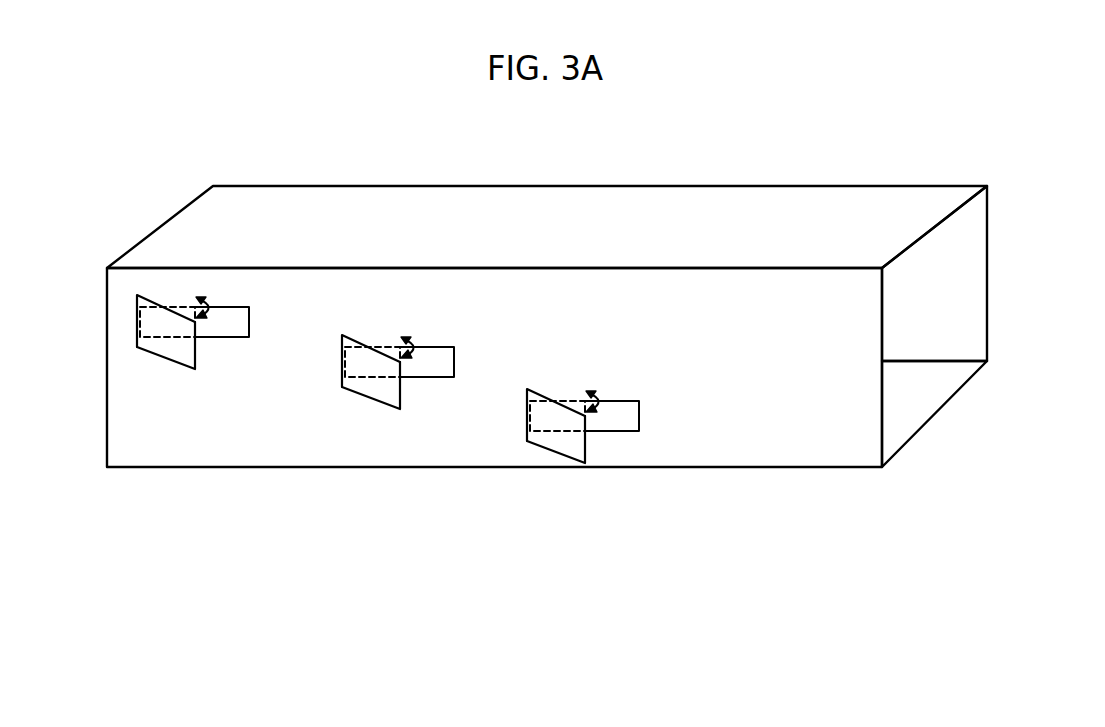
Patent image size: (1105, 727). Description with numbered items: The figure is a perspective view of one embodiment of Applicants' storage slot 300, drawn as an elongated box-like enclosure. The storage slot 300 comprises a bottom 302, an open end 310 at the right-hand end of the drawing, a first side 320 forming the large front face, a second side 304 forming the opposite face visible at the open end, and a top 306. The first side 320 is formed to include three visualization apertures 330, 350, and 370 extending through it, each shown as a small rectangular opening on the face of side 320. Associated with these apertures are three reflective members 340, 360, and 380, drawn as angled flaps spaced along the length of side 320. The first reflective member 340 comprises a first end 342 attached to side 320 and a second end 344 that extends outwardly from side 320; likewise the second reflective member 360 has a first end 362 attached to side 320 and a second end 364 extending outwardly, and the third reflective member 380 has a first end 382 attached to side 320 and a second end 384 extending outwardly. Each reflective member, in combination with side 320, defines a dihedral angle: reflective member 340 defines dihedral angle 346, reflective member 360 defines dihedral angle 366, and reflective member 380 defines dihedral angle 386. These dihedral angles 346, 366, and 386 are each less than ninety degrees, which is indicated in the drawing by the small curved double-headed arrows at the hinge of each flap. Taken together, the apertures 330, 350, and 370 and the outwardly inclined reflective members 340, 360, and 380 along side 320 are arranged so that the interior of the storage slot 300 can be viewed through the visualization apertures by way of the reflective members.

The storage slot 300 is at (568, 413).
The open end 310 is at (587, 326).
The bottom 302 is at (899, 401).
The second side 304 is at (921, 304).
The top 306 is at (538, 234).
The first side 320 is at (774, 372).
The visualization aperture 330 is at (639, 412).
The first reflective member 340 is at (579, 449).
The first end of first reflective member 342 is at (527, 419).
The second end of first reflective member 344 is at (585, 454).
The dihedral angle 346 is at (612, 401).
The visualization aperture 350 is at (454, 358).
The second reflective member 360 is at (394, 395).
The first end of second reflective member 362 is at (342, 365).
The second end of second reflective member 364 is at (400, 400).
The dihedral angle 366 is at (427, 347).
The visualization aperture 370 is at (249, 318).
The third reflective member 380 is at (189, 355).
The first end of third reflective member 382 is at (137, 325).
The second end of third reflective member 384 is at (195, 360).
The dihedral angle 386 is at (222, 307).